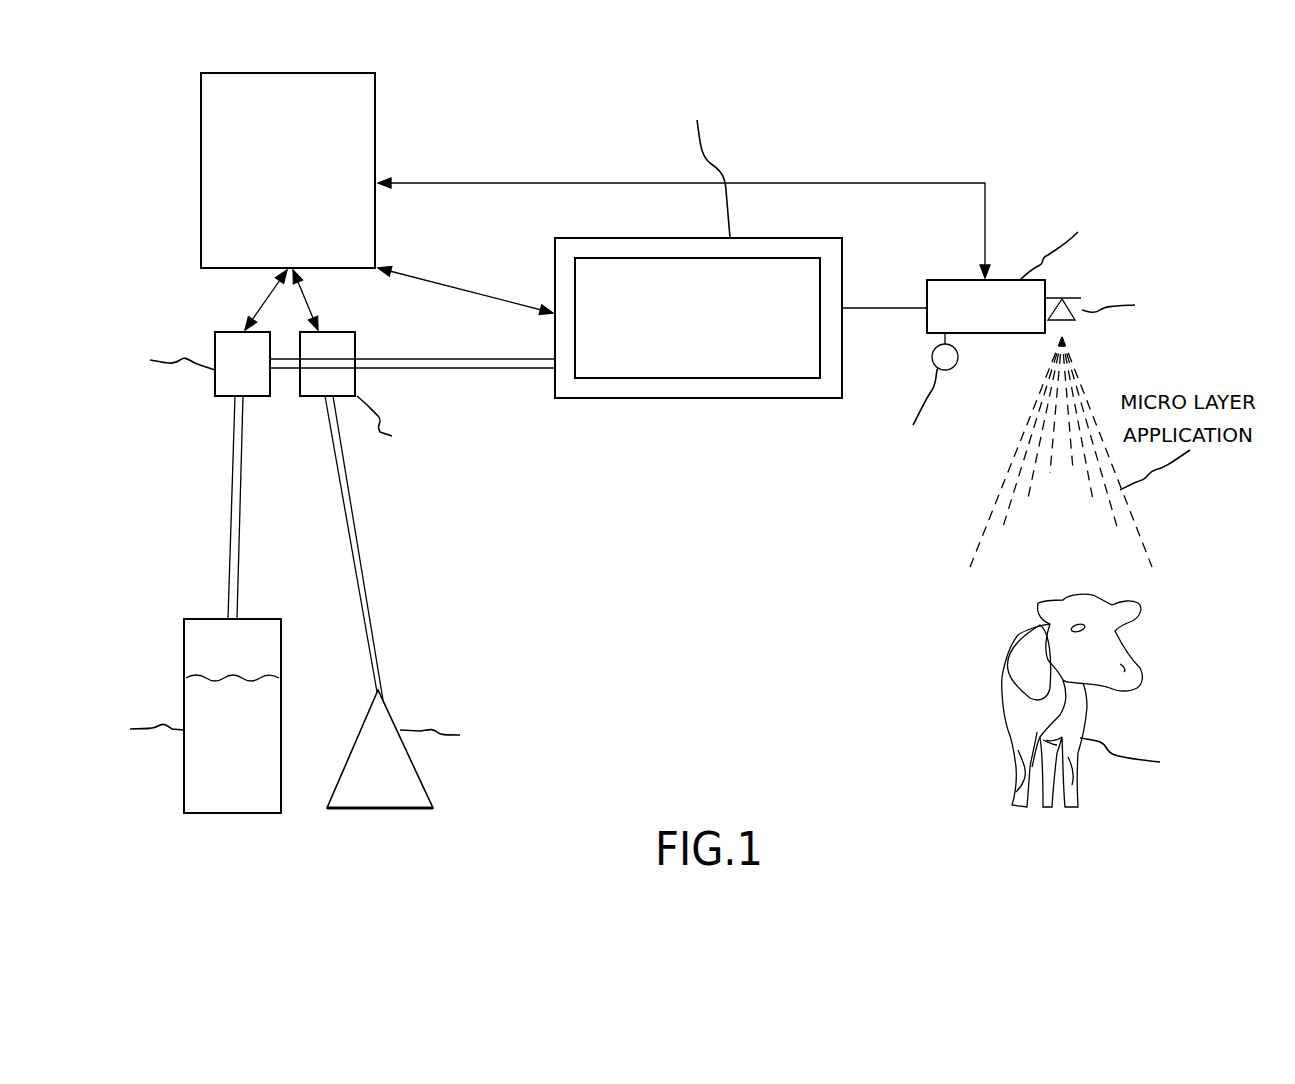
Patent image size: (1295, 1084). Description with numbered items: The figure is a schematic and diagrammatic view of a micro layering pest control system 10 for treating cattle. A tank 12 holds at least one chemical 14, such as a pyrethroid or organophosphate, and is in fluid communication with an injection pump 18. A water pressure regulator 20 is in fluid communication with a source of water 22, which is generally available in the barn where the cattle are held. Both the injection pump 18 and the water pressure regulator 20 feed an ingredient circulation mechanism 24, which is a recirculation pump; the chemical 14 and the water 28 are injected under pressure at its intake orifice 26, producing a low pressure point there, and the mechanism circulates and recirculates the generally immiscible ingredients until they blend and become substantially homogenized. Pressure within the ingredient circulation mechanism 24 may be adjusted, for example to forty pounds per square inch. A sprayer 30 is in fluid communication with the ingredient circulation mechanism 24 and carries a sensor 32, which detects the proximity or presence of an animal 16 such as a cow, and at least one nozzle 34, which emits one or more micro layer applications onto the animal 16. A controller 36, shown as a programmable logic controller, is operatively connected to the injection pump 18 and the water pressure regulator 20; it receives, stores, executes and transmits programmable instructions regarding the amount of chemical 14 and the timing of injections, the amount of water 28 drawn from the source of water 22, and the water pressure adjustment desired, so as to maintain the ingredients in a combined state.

The micro layering pest control system 10 is at (924, 118).
The tank 12 is at (228, 813).
The chemical 14 is at (184, 790).
The animal 16 is at (1008, 662).
The injection pump 18 is at (215, 389).
The water pressure regulator 20 is at (300, 396).
The source of water 22 is at (405, 808).
The ingredient circulation mechanism 24 is at (697, 398).
The intake orifice 26 is at (555, 369).
The water 28 is at (355, 795).
The sprayer 30 is at (1045, 285).
The sensor 32 is at (955, 368).
The nozzle 34 is at (1075, 320).
The controller 36 is at (201, 105).